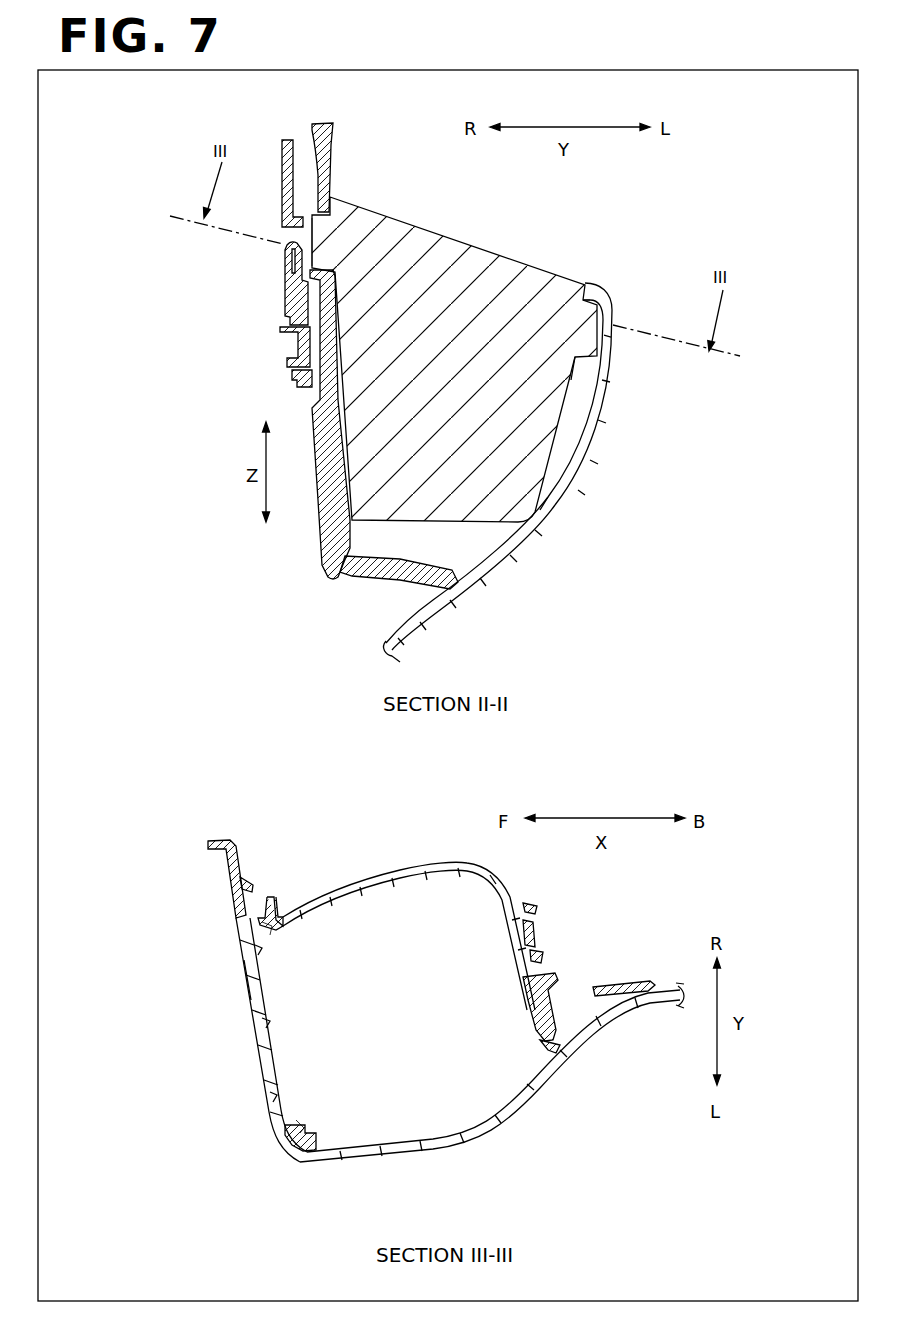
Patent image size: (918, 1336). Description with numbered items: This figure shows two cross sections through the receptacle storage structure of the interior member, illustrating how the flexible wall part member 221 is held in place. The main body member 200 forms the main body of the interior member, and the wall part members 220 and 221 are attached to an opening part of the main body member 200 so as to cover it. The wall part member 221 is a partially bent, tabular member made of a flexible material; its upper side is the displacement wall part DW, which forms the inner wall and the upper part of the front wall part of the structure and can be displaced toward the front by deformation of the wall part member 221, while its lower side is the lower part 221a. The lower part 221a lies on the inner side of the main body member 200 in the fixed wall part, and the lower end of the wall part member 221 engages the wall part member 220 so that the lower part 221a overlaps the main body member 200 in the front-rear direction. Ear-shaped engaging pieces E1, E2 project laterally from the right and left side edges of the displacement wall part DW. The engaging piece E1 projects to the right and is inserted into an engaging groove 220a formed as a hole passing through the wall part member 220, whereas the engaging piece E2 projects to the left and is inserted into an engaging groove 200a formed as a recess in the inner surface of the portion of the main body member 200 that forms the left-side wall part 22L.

The displacement wall part DW is at (500, 272).
The wall part member 220 is at (318, 405).
The engaging groove 220a is at (311, 283).
The wall part member 221 is at (580, 386).
The lower part 221a is at (560, 446).
The left-side wall part 22L is at (575, 499).
The engaging piece E1 is at (306, 256).
The engaging piece E2 is at (607, 312).
The main body member 200 is at (538, 1100).
The engaging groove 200a is at (302, 1160).